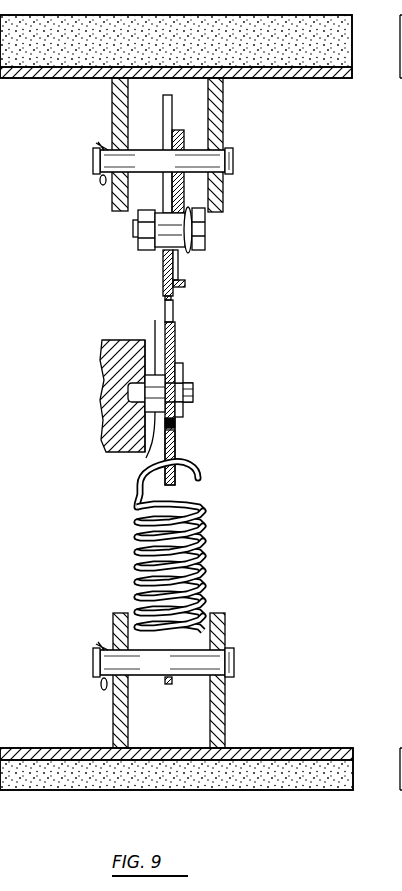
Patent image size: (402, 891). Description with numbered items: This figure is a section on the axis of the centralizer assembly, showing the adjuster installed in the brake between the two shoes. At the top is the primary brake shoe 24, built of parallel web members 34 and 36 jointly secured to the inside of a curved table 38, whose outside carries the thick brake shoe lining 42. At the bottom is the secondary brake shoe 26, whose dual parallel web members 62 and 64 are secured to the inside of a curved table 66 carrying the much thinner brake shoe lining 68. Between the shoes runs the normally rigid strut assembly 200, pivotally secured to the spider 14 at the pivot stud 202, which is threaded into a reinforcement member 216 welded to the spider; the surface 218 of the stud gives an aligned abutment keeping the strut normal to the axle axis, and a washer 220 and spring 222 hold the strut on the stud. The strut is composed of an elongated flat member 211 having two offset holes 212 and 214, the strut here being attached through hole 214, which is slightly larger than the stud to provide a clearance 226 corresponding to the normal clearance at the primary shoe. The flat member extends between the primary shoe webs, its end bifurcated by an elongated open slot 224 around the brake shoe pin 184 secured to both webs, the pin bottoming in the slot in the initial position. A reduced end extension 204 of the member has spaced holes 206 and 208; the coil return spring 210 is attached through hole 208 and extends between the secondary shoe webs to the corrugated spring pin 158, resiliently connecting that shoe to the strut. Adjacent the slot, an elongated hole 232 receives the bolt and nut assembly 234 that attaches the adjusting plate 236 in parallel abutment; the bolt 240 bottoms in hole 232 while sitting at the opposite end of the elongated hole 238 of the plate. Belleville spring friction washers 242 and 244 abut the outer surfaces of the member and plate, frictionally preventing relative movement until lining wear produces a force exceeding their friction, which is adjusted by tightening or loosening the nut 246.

The spider 14 is at (100, 342).
The primary brake shoe 24 is at (292, 84).
The secondary brake shoe 26 is at (283, 750).
The web member 34 is at (112, 112).
The web member 36 is at (224, 110).
The curved table 38 is at (52, 79).
The brake shoe lining 42 is at (400, 47).
The web member 62 is at (113, 716).
The web member 64 is at (225, 712).
The curved table 66 is at (400, 735).
The brake shoe lining 68 is at (400, 810).
The corrugated spring pin 158 is at (195, 680).
The brake shoe pin 184 is at (233, 166).
The strut assembly 200 is at (180, 341).
The pivot stud 202 is at (128, 388).
The reduced end extension 204 is at (177, 448).
The hole 206 is at (176, 430).
The hole 208 is at (194, 471).
The coil return spring 210 is at (203, 575).
The elongated flat member 211 is at (180, 340).
The hole 212 is at (172, 298).
The hole 214 is at (192, 388).
The reinforcement member 216 is at (143, 342).
The surface 218 is at (155, 350).
The washer 220 is at (183, 376).
The spring 222 is at (186, 405).
The elongated open slot 224 is at (168, 97).
The clearance 226 is at (148, 456).
The elongated hole 232 is at (159, 163).
The bolt and nut assembly 234 is at (205, 230).
The adjusting plate 236 is at (185, 188).
The elongated hole 238 is at (185, 272).
The bolt 240 is at (138, 240).
The Belleville spring friction washer 242 is at (160, 214).
The Belleville spring friction washer 244 is at (190, 258).
The nut 246 is at (133, 218).